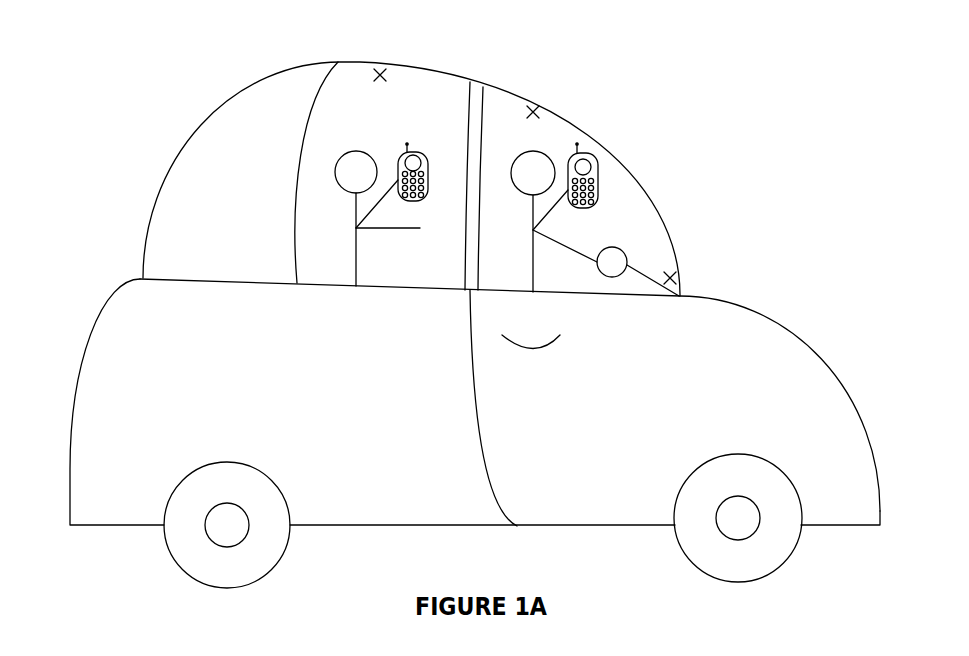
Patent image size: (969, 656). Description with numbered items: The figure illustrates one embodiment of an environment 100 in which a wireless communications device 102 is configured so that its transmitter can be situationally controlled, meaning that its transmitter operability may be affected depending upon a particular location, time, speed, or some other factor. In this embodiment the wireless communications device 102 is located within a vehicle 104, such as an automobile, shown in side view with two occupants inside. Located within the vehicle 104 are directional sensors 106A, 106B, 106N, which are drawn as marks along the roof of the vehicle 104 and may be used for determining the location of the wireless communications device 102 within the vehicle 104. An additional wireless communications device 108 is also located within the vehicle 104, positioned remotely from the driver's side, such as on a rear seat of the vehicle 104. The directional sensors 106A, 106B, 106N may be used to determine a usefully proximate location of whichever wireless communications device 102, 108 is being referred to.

The environment 100 is at (708, 175).
The wireless communications device 102 is at (580, 148).
The vehicle 104 is at (728, 300).
The directional sensor 106A is at (529, 104).
The directional sensor 106B is at (672, 271).
The directional sensor 106N is at (378, 68).
The additional wireless communications device 108 is at (412, 146).